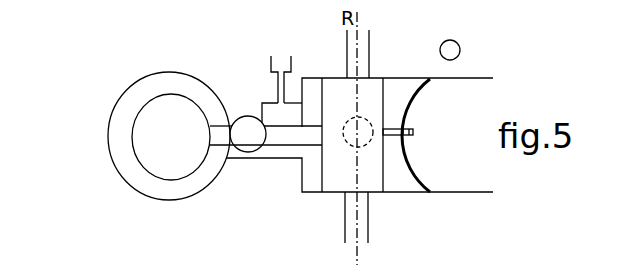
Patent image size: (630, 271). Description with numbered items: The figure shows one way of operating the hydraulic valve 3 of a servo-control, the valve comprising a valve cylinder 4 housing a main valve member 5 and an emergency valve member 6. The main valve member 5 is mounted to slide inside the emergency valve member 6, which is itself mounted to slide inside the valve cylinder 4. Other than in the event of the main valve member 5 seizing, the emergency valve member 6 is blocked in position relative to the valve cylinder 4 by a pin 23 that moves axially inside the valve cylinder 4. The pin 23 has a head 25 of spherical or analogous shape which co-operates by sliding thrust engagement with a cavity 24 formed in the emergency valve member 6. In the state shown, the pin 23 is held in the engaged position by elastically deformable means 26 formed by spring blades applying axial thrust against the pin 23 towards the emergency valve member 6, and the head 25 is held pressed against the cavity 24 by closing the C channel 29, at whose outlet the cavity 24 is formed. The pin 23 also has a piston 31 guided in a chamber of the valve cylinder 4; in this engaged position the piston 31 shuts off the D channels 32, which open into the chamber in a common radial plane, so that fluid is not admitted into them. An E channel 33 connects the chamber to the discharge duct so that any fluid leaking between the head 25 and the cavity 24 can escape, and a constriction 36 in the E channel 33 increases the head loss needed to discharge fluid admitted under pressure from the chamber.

The hydraulic valve 3 is at (490, 57).
The valve cylinder 4 is at (450, 50).
The main valve member 5 is at (141, 166).
The emergency valve member 6 is at (142, 78).
The pin 23 is at (291, 146).
The cavity 24 is at (228, 126).
The head 25 is at (248, 134).
The elastically deformable means 26 is at (413, 100).
The C channel 29 is at (229, 146).
The piston 31 is at (312, 96).
The D channels 32 is at (370, 43).
The E channel 33 is at (271, 57).
The constriction 36 is at (277, 80).